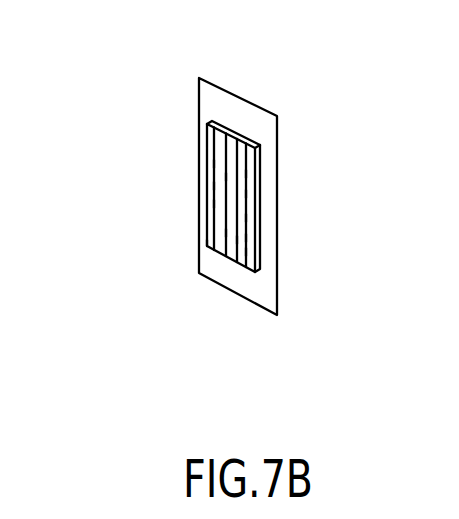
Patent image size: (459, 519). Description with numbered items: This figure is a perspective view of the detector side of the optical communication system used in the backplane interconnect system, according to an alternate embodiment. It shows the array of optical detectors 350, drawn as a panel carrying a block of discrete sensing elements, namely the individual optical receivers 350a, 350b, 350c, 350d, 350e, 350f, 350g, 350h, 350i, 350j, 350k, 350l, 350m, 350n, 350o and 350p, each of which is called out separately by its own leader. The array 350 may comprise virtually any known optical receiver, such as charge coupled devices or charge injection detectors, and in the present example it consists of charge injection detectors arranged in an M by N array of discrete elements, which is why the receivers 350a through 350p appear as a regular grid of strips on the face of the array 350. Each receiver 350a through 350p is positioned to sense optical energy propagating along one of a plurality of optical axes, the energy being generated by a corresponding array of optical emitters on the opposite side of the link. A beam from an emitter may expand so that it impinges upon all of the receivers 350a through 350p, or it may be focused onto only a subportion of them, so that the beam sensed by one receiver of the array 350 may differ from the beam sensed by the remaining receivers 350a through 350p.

The array of optical detectors 350 is at (277, 267).
The optical receiver 350a is at (218, 137).
The optical receiver 350b is at (240, 147).
The optical receiver 350c is at (229, 142).
The optical receiver 350d is at (252, 154).
The optical receiver 350e is at (222, 177).
The optical receiver 350f is at (220, 167).
The optical receiver 350g is at (244, 174).
The optical receiver 350h is at (244, 194).
The optical receiver 350i is at (202, 190).
The optical receiver 350j is at (208, 203).
The optical receiver 350k is at (247, 218).
The optical receiver 350l is at (248, 238).
The optical receiver 350m is at (208, 243).
The optical receiver 350n is at (228, 233).
The optical receiver 350o is at (244, 240).
The optical receiver 350p is at (243, 252).